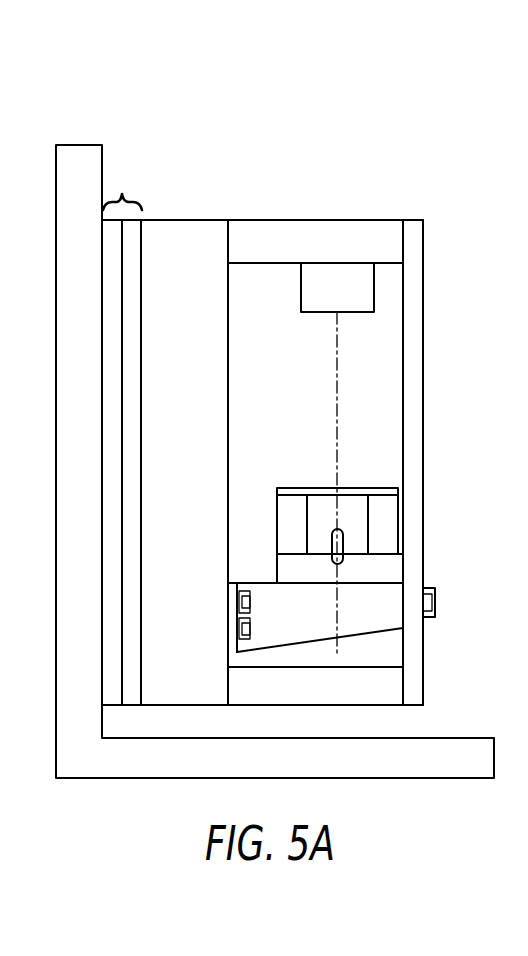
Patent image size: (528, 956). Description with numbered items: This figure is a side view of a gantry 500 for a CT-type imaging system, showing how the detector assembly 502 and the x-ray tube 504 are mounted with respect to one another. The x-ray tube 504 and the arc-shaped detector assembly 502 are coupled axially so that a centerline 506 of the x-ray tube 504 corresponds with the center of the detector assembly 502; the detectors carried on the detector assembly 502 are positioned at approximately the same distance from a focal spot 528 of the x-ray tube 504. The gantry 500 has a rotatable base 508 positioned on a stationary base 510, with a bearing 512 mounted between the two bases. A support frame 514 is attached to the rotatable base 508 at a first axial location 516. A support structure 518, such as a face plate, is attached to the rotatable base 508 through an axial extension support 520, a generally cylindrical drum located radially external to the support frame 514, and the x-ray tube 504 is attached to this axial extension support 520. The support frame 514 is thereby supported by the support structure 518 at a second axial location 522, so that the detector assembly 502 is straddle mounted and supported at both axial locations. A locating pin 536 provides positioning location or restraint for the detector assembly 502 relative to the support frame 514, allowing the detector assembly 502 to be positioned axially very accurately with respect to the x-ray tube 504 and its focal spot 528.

The gantry 500 is at (228, 168).
The detector assembly 502 is at (384, 521).
The x-ray tube 504 is at (375, 289).
The centerline 506 is at (337, 453).
The rotatable base 508 is at (175, 218).
The stationary base 510 is at (80, 143).
The bearing 512 is at (123, 194).
The support frame 514 is at (380, 612).
The first axial location 516 is at (217, 670).
The support structure 518 is at (424, 241).
The axial extension support 520 is at (371, 690).
The second axial location 522 is at (423, 572).
The focal spot 528 is at (334, 314).
The locating pin 536 is at (333, 541).